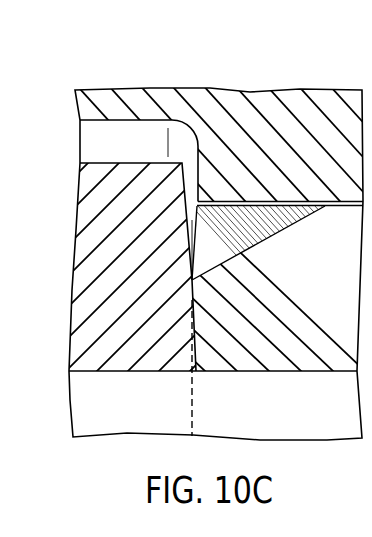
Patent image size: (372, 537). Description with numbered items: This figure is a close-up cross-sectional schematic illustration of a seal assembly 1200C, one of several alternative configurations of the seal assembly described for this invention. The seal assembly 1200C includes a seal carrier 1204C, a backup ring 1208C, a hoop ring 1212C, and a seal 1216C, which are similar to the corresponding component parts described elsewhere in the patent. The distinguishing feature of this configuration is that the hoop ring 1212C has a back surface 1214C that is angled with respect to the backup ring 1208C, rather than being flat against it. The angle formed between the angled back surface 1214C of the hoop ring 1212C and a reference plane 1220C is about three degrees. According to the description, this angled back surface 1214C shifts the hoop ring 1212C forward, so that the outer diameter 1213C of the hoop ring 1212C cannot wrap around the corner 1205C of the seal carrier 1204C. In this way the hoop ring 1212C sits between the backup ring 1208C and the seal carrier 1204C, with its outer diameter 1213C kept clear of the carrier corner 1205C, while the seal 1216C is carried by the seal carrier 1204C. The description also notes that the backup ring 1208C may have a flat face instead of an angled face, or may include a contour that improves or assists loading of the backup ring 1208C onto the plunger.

The seal assembly 1200C is at (201, 75).
The seal carrier 1204C is at (295, 105).
The corner of the seal carrier 1205C is at (168, 172).
The outer diameter of the hoop ring 1213C is at (218, 201).
The back surface of the hoop ring 1214C is at (192, 216).
The hoop ring 1212C is at (190, 250).
The backup ring 1208C is at (82, 274).
The seal 1216C is at (215, 365).
The reference plane 1220C is at (192, 408).